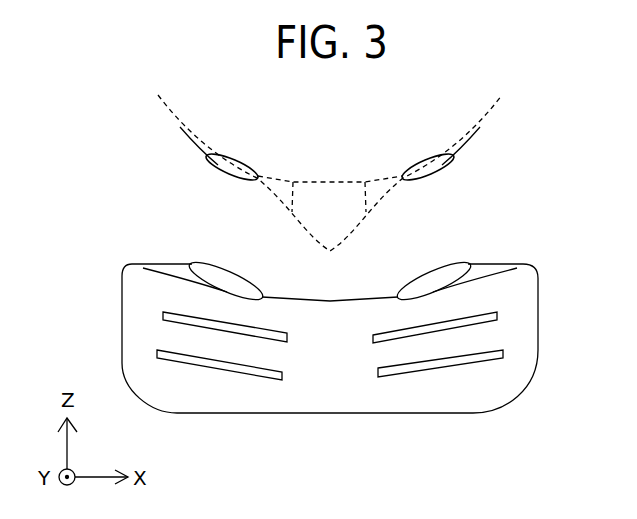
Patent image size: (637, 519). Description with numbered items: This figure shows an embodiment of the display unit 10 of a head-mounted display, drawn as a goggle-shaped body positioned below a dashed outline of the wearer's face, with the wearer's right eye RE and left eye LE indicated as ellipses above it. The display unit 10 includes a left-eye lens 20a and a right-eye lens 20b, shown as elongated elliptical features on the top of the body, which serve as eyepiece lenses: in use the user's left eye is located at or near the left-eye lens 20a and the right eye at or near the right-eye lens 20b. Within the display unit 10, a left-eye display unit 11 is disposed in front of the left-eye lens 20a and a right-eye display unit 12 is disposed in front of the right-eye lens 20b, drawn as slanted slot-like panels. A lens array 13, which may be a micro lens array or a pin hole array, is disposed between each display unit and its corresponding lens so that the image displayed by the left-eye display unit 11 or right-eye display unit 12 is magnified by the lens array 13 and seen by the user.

The display unit 10 is at (528, 325).
The left-eye display unit 11 is at (243, 368).
The right-eye display unit 12 is at (415, 368).
The lens array 13 is at (371, 338).
The left-eye lens 20a is at (442, 276).
The right-eye lens 20b is at (218, 276).
The right eye RE is at (218, 165).
The left eye LE is at (442, 165).